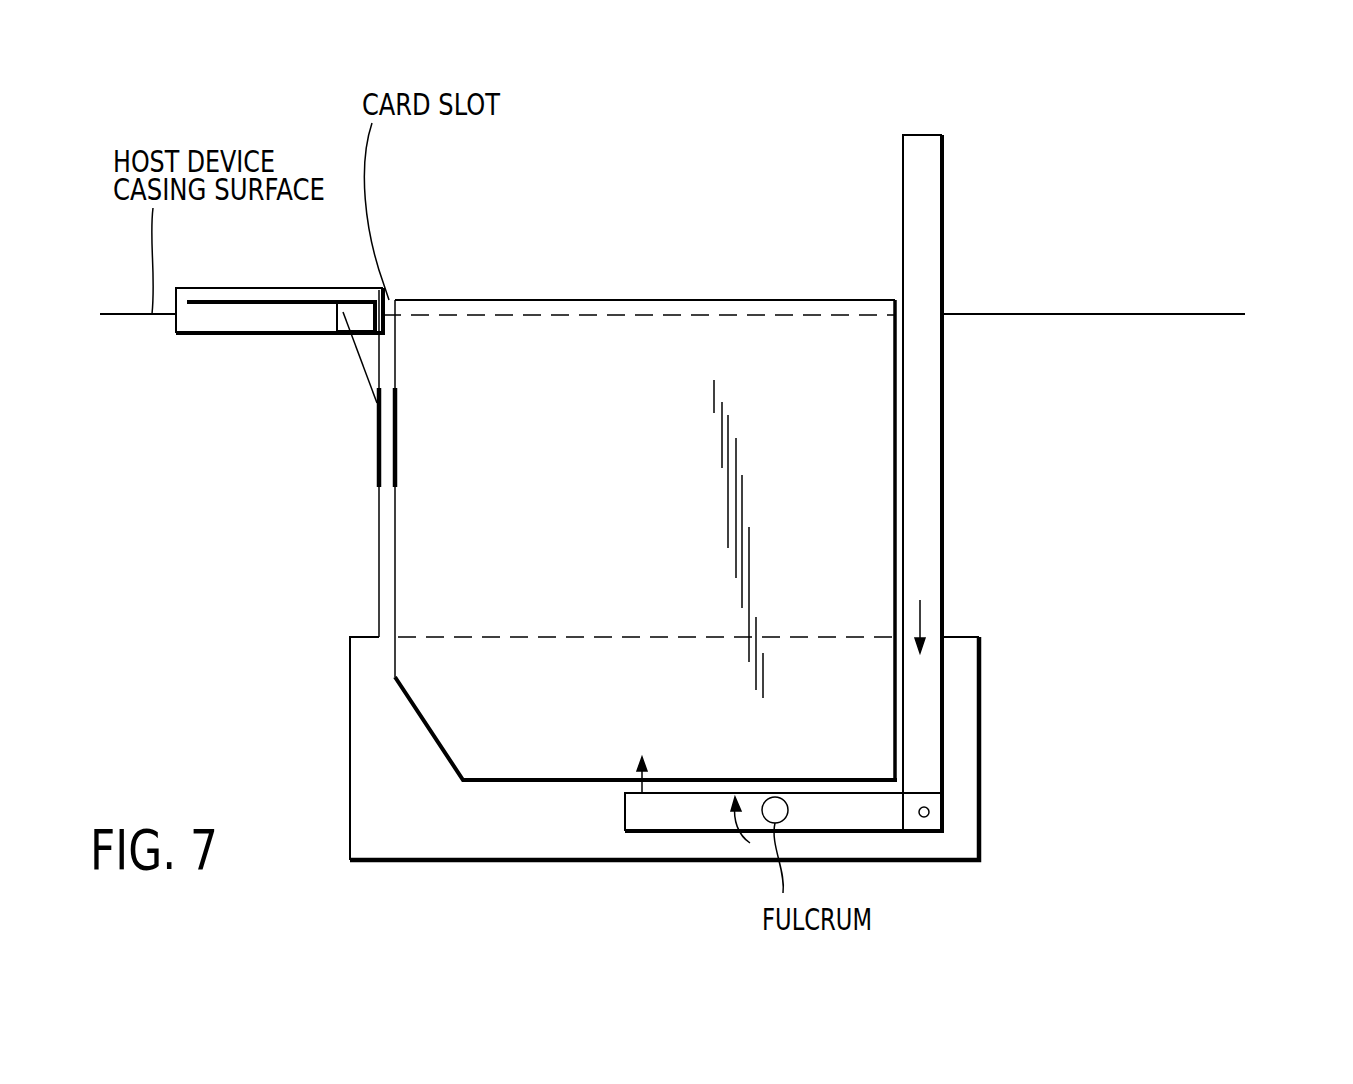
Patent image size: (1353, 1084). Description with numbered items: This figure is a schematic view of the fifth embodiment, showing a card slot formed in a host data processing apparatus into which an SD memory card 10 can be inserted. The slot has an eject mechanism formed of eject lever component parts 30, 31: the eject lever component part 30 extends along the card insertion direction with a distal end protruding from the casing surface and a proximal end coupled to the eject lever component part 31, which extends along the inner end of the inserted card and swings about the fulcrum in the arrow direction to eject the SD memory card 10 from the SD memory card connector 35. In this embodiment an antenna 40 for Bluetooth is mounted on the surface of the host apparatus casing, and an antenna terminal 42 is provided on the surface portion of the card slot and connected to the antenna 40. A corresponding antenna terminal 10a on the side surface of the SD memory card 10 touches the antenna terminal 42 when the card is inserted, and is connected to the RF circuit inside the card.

The SD memory card 10 is at (605, 300).
The antenna terminal 10a is at (395, 388).
The eject lever component part 30 is at (942, 446).
The eject lever component part 31 is at (892, 833).
The SD memory card connector 35 is at (982, 742).
The antenna 40 is at (220, 300).
The antenna terminal 42 is at (379, 440).